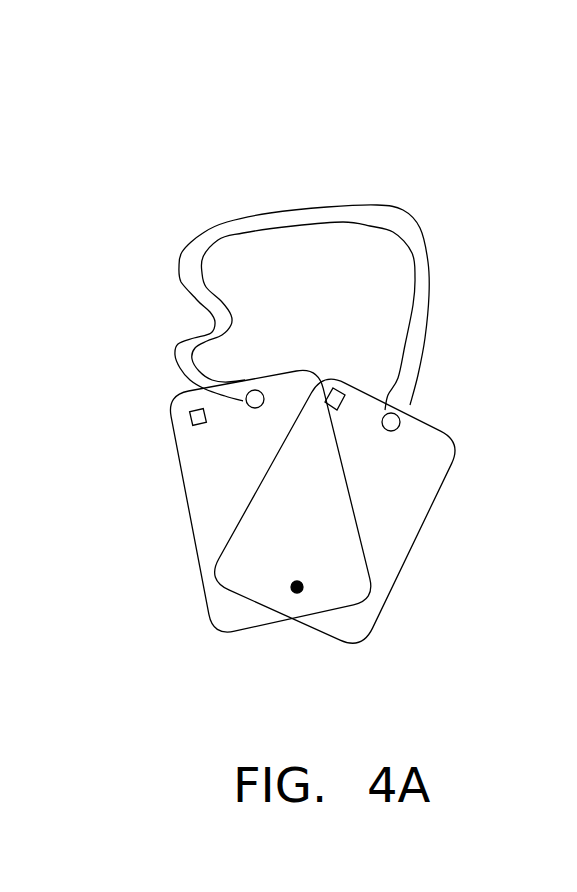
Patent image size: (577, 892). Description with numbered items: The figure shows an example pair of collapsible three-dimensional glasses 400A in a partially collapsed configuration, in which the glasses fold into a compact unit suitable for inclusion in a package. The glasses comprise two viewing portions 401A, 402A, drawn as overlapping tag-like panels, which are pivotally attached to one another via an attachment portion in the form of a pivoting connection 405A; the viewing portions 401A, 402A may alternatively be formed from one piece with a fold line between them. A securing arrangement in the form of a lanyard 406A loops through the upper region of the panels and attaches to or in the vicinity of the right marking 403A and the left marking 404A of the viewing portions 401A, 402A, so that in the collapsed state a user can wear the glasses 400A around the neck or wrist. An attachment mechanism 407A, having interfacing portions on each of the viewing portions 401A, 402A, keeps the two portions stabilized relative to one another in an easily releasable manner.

The 3D glasses 400A is at (282, 171).
The viewing portion 401A is at (177, 457).
The viewing portion 402A is at (404, 560).
The right marking 403A is at (258, 391).
The left marking 404A is at (395, 430).
The pivoting connection 405A is at (296, 593).
The lanyard 406A is at (217, 223).
The attachment mechanism 407A is at (325, 402).